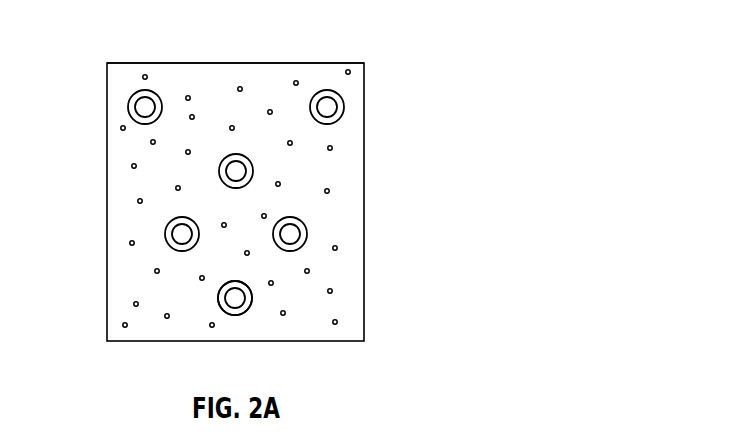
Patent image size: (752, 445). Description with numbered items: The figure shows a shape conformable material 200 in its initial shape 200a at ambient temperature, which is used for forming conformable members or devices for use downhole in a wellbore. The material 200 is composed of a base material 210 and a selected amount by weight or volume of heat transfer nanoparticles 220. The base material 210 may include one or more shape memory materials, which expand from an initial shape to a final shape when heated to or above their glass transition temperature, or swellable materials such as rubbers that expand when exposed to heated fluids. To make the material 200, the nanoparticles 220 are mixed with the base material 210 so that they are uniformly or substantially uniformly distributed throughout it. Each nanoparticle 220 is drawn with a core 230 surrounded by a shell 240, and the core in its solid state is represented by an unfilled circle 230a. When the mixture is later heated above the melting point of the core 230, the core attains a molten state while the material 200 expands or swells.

The shape conformable material 200 is at (148, 48).
The initial shape 200a is at (330, 63).
The base material 210 is at (118, 92).
The nanoparticles 220 is at (127, 105).
The core 230 is at (218, 296).
The unfilled circle 230a is at (290, 234).
The shell 240 is at (218, 308).